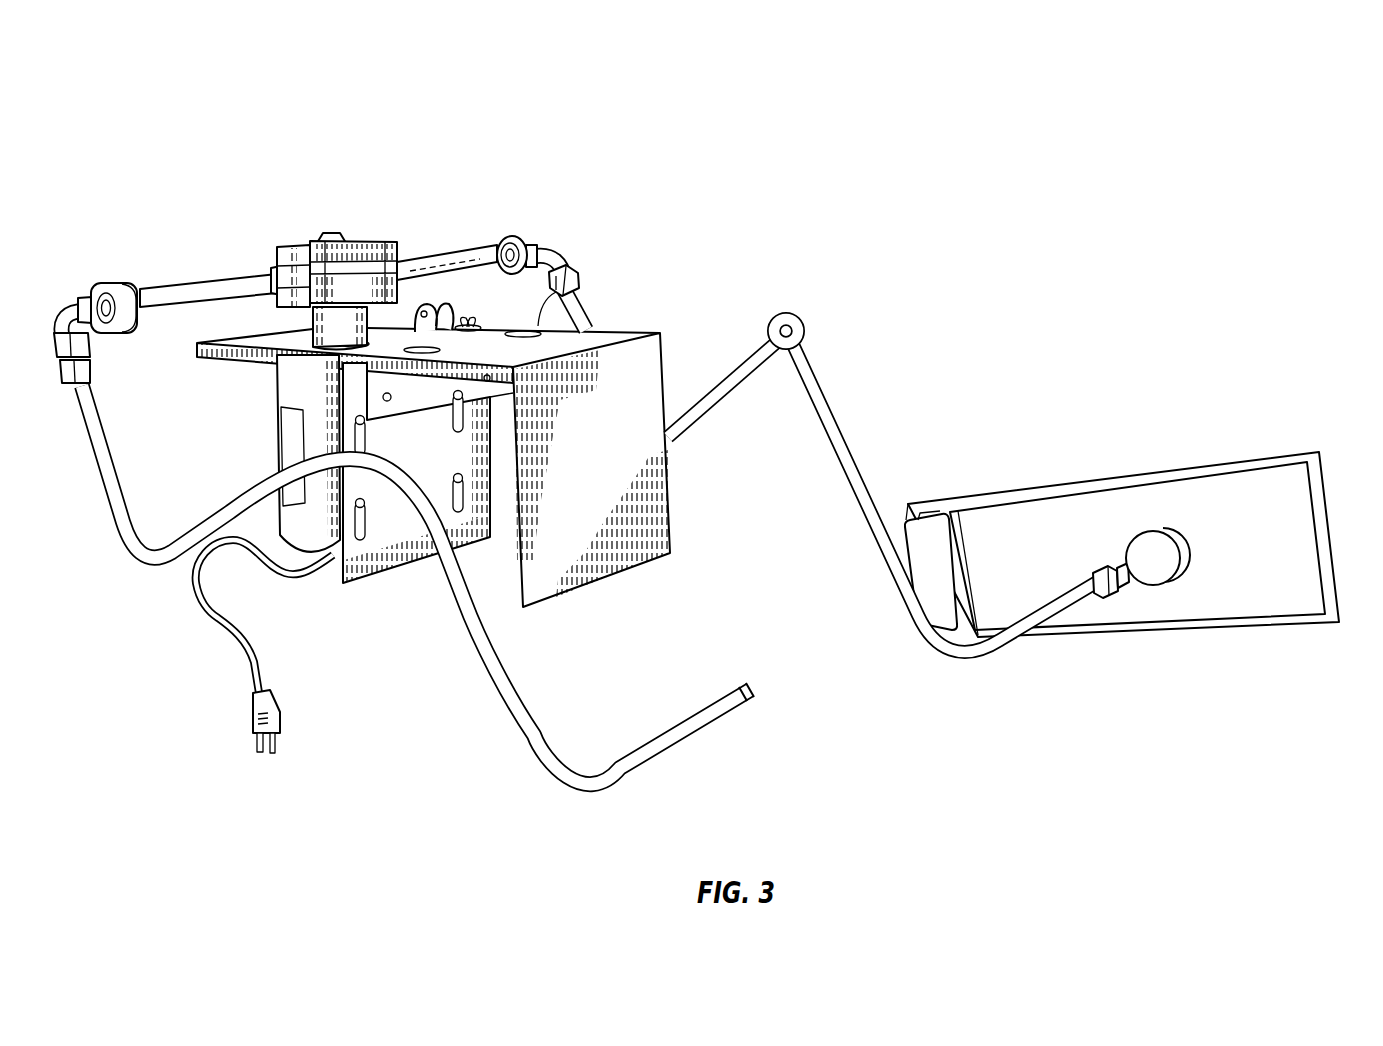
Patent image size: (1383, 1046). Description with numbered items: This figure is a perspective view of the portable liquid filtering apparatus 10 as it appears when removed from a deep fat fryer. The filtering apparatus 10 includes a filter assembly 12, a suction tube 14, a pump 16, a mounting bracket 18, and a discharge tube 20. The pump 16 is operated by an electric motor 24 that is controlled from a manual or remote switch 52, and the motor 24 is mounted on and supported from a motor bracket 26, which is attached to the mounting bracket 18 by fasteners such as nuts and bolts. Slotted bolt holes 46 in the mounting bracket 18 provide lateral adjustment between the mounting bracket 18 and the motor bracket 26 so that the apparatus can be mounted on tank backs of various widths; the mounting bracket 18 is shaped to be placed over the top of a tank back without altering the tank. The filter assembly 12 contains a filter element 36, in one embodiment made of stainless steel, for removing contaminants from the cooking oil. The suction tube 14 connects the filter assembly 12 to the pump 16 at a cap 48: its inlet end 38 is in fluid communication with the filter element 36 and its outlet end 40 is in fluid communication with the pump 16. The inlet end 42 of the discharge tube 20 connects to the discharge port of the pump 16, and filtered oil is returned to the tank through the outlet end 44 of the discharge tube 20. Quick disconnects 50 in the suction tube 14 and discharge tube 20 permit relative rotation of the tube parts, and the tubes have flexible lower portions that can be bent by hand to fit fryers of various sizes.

The portable liquid filtering apparatus 10 is at (147, 143).
The filter assembly 12 is at (1298, 431).
The suction tube 14 is at (823, 442).
The pump 16 is at (302, 248).
The mounting bracket 18 is at (648, 372).
The discharge tube 20 is at (462, 620).
The electric motor 24 is at (280, 425).
The motor bracket 26 is at (213, 360).
The filter element 36 is at (1073, 483).
The inlet end of suction tube 38 is at (1102, 568).
The outlet end of suction tube 40 is at (396, 265).
The inlet end of discharge tube 42 is at (273, 271).
The outlet end of discharge tube 44 is at (760, 693).
The slotted bolt holes 46 is at (574, 282).
The cap 48 is at (1180, 555).
The quick disconnects 50 is at (110, 288).
The manual or remote switch 52 is at (450, 318).